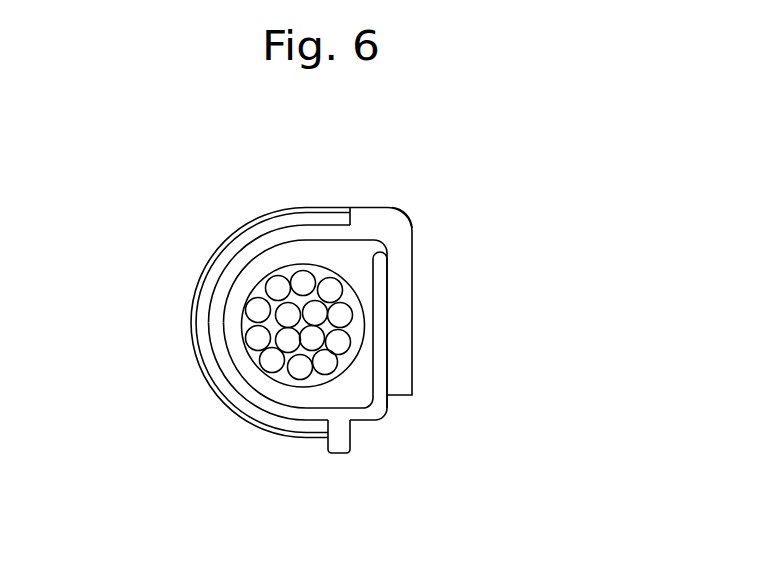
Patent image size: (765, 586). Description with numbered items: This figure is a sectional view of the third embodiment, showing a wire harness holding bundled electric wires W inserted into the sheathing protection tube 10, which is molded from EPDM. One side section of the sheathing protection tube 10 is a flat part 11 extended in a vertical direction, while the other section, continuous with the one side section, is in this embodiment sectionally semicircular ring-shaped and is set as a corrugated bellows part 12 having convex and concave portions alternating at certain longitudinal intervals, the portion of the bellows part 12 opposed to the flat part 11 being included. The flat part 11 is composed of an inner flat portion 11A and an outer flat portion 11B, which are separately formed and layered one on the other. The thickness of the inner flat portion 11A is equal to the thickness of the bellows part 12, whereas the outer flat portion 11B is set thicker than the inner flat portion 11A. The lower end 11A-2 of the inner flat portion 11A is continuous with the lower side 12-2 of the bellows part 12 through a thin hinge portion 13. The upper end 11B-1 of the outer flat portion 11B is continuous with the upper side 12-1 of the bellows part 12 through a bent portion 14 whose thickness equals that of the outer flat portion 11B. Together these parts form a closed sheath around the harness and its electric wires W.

The sheathing protection tube 10 is at (346, 306).
The flat part 11 is at (405, 297).
The inner flat portion 11A is at (384, 368).
The lower end of the inner flat portion 11A-2 is at (383, 402).
The outer flat portion 11B is at (383, 252).
The upper end of the outer flat portion 11B-1 is at (400, 228).
The bellows part 12 is at (280, 308).
The upper side of the bellows part 12-1 is at (348, 207).
The lower side of the bellows part 12-2 is at (352, 423).
The thin hinge portion 13 is at (378, 419).
The bent portion 14 is at (382, 208).
The electric wires W is at (300, 367).